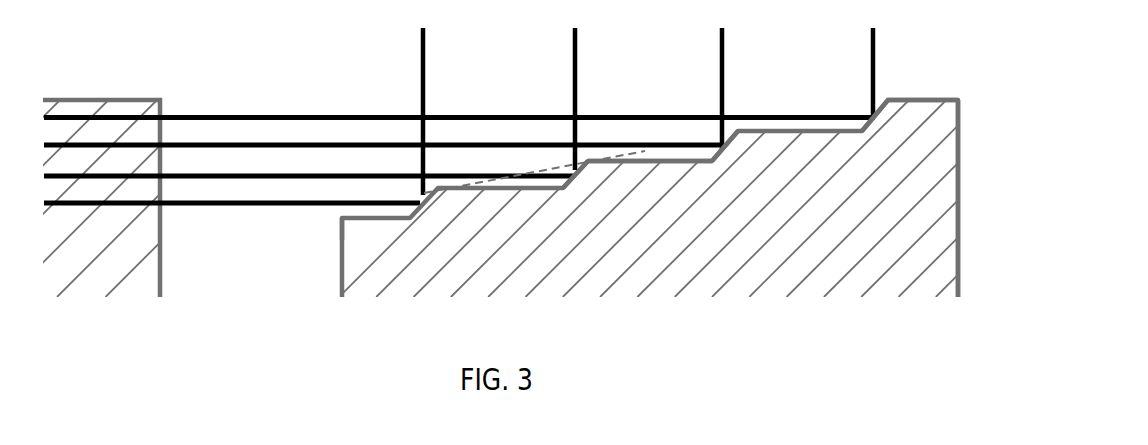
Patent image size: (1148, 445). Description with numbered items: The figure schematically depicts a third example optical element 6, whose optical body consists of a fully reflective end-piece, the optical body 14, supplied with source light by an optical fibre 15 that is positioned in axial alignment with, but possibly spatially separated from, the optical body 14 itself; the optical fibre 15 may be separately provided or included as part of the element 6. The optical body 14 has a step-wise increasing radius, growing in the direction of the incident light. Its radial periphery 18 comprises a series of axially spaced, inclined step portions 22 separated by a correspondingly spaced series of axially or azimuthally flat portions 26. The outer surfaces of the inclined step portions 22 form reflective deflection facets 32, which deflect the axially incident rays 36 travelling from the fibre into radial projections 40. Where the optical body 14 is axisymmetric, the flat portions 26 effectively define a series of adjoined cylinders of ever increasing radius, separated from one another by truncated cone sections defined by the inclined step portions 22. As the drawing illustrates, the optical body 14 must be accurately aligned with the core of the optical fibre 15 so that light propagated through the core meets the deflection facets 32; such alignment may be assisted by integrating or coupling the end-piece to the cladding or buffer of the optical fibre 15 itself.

The optical element 6 is at (852, 312).
The optical body 14 is at (705, 285).
The optical fibre 15 is at (67, 100).
The radial periphery 18 is at (324, 228).
The inclined step portions 22 is at (584, 190).
The flat portions 26 is at (658, 188).
The reflective deflection facets 32 is at (878, 106).
The axially incident rays 36 is at (193, 115).
The radial projections 40 is at (425, 55).